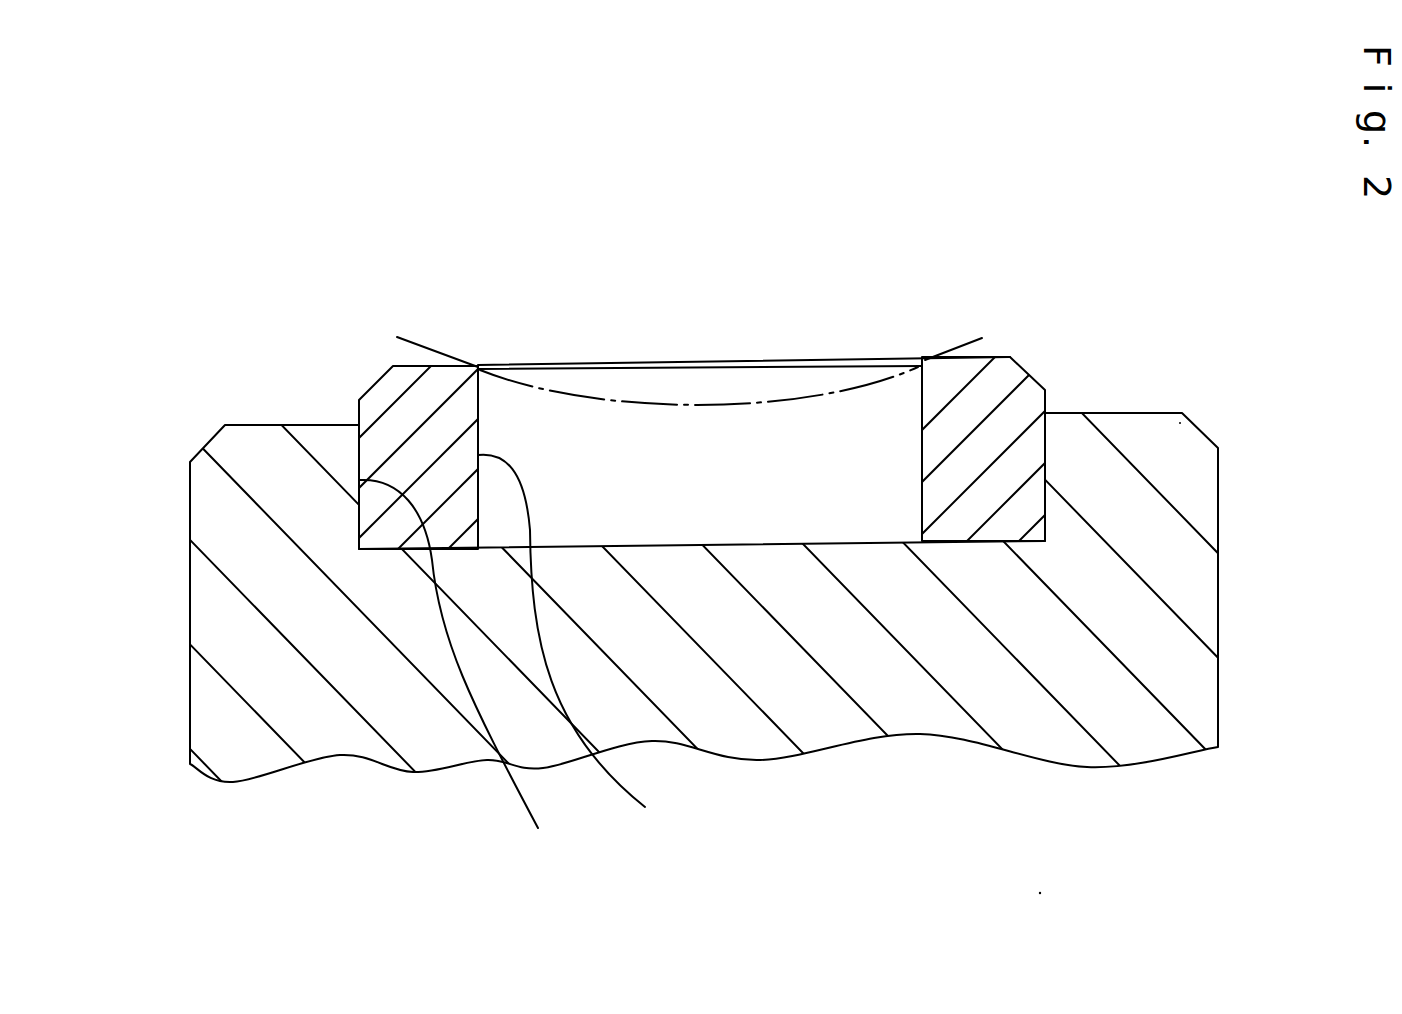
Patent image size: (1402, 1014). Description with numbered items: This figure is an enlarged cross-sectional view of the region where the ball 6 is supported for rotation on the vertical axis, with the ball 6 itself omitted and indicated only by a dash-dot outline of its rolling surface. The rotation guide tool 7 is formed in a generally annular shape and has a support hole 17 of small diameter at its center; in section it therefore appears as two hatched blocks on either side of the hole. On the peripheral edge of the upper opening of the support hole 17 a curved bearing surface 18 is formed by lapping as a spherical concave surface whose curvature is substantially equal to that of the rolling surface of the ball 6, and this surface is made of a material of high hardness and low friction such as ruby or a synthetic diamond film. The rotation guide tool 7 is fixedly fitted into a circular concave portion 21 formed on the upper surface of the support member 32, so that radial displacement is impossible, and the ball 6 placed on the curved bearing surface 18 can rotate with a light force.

The ball 6 is at (754, 400).
The rotation guide tool 7 is at (410, 413).
The curved bearing surface 18 is at (478, 367).
The support hole 17 is at (575, 651).
The circular concave portion 21 is at (462, 675).
The support member 32 is at (210, 613).